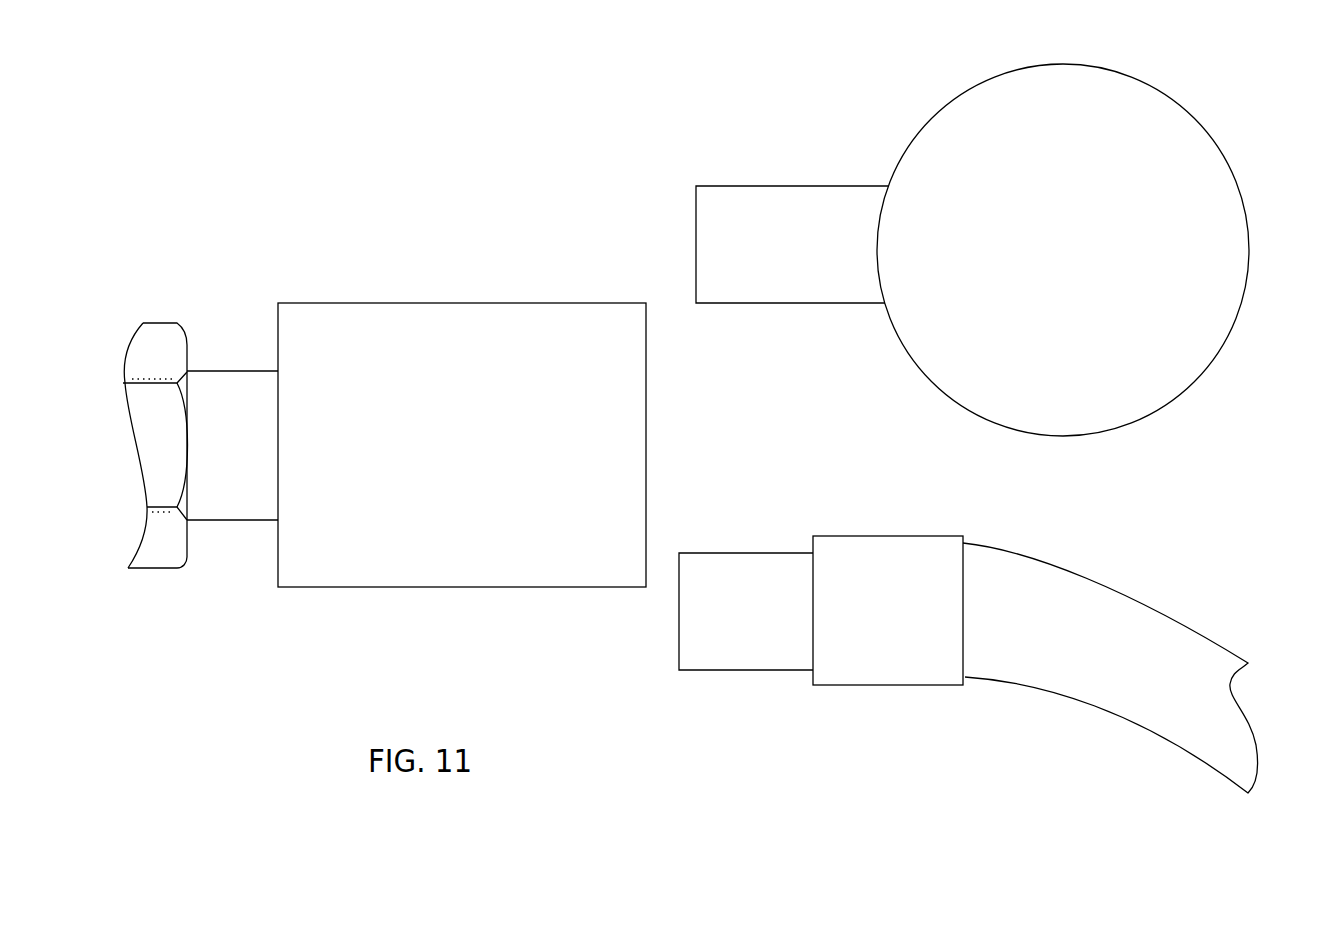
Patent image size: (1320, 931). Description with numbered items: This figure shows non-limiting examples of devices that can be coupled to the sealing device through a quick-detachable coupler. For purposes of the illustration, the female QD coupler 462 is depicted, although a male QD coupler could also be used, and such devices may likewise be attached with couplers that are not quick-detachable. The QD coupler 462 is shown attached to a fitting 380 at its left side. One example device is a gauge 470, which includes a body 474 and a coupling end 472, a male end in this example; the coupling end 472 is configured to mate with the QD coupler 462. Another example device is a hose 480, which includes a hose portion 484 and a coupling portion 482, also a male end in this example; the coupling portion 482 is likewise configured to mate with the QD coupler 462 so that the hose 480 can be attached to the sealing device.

The nut 380 is at (228, 545).
The female QD coupler 462 is at (410, 297).
The gauge 470 is at (908, 96).
The coupling end 472 is at (746, 185).
The body 474 is at (972, 362).
The hose 480 is at (877, 728).
The coupling portion 482 is at (747, 672).
The hose portion 484 is at (1015, 547).